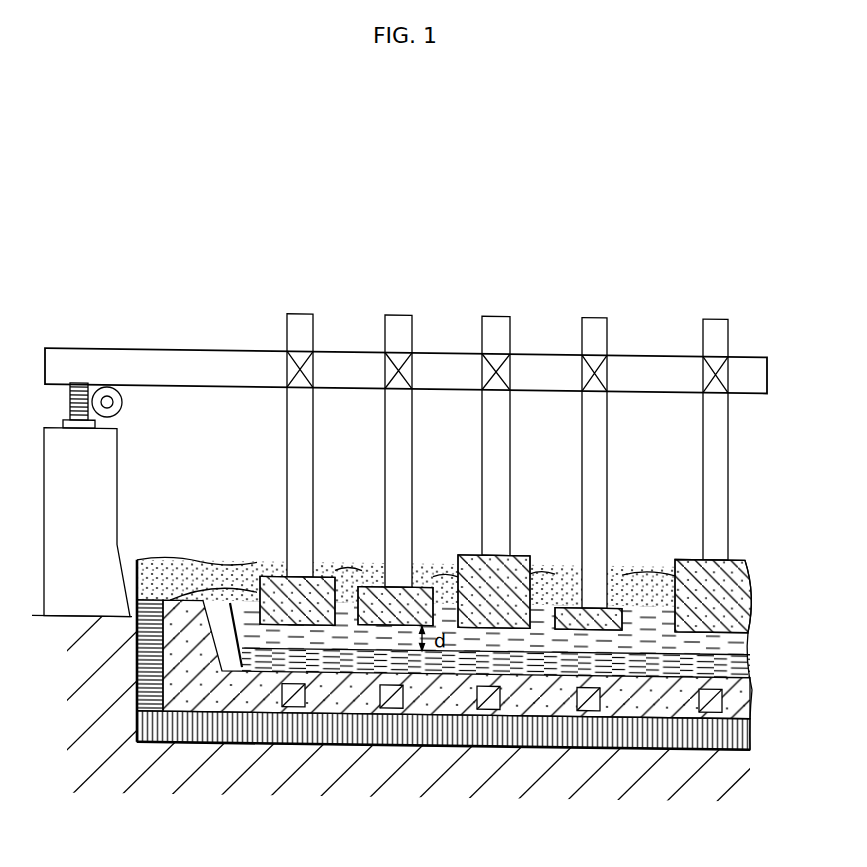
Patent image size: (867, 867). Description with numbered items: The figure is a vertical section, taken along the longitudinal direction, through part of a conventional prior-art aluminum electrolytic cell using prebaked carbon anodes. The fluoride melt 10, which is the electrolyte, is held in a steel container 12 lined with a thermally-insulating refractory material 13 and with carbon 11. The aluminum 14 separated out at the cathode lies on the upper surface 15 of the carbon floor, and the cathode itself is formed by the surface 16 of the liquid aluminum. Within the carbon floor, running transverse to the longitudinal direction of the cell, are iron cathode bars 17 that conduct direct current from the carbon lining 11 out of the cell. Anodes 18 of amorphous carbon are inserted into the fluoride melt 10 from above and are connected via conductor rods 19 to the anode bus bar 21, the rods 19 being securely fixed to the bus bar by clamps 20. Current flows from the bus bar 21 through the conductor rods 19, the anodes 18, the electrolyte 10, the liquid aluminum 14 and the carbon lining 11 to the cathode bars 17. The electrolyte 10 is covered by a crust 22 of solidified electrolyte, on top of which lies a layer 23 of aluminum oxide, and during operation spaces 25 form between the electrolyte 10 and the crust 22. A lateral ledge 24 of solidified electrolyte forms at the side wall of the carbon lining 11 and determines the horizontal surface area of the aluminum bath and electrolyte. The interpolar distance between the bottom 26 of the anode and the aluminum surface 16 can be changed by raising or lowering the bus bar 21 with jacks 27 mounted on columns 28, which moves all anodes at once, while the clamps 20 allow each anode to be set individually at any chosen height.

The fluoride melt 10 is at (723, 639).
The carbon lining 11 is at (260, 670).
The steel container 12 is at (137, 706).
The thermally-insulating refractory material 13 is at (167, 726).
The aluminum 14 is at (367, 650).
The upper surface of the carbon floor 15 is at (468, 661).
The surface of the liquid aluminum 16 is at (552, 650).
The iron cathode bars 17 is at (487, 701).
The anodes 18 is at (420, 588).
The conductor rods 19 is at (300, 408).
The clamps 20 is at (492, 376).
The anode bus bar 21 is at (243, 357).
The crust of solidified electrolyte 22 is at (346, 598).
The layer of aluminum oxide 23 is at (165, 578).
The lateral ledge 24 is at (227, 650).
The spaces 25 is at (553, 601).
The bottom of the anode 26 is at (700, 629).
The jacks 27 is at (127, 406).
The columns 28 is at (97, 475).